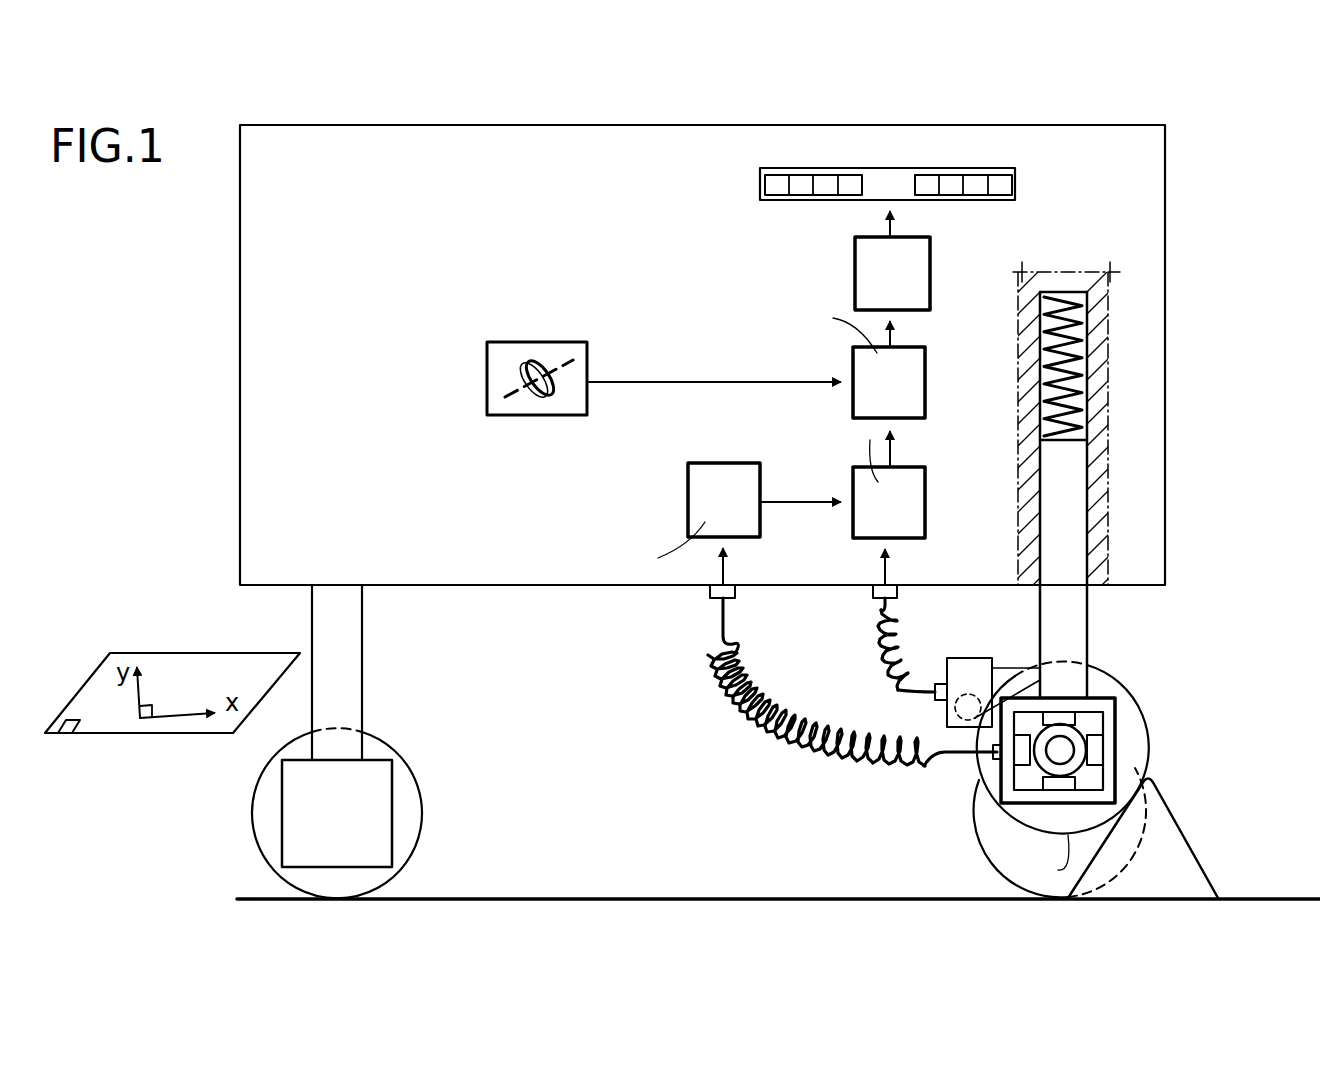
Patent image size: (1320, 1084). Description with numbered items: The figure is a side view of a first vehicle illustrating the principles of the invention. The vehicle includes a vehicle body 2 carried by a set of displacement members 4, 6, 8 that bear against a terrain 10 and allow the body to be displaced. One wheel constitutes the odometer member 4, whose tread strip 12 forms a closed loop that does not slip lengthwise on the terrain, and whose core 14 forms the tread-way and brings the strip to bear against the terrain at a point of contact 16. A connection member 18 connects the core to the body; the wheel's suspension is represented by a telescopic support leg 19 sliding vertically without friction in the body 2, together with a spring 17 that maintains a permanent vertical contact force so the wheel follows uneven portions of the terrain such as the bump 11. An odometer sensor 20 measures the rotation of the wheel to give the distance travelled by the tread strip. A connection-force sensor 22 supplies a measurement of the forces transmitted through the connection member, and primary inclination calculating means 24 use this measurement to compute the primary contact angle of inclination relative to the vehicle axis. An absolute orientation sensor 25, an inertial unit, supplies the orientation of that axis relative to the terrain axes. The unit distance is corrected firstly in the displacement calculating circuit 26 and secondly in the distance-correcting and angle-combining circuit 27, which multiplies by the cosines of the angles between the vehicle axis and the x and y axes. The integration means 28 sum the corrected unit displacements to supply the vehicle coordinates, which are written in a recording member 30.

The vehicle body 2 is at (1165, 357).
The odometer member 4 is at (973, 767).
The displacement member 6 is at (972, 828).
The displacement member 8 is at (410, 862).
The terrain 10 is at (707, 895).
The uneven portion 11 is at (1190, 857).
The tread strip 12 is at (1060, 870).
The core 14 is at (1077, 772).
The point of contact 16 is at (1143, 800).
The spring 17 is at (1030, 340).
The connection member 18 is at (1066, 745).
The telescopic support leg 19 is at (1087, 617).
The odometer sensor 20 is at (947, 715).
The connection-force sensor 22 is at (1098, 748).
The primary inclination calculating means 24 is at (697, 505).
The absolute orientation sensor 25 is at (487, 376).
The displacement calculating circuit 26 is at (920, 477).
The distance-correcting and angle-combining circuit 27 is at (870, 357).
The integration means 28 is at (858, 250).
The recording member 30 is at (760, 190).